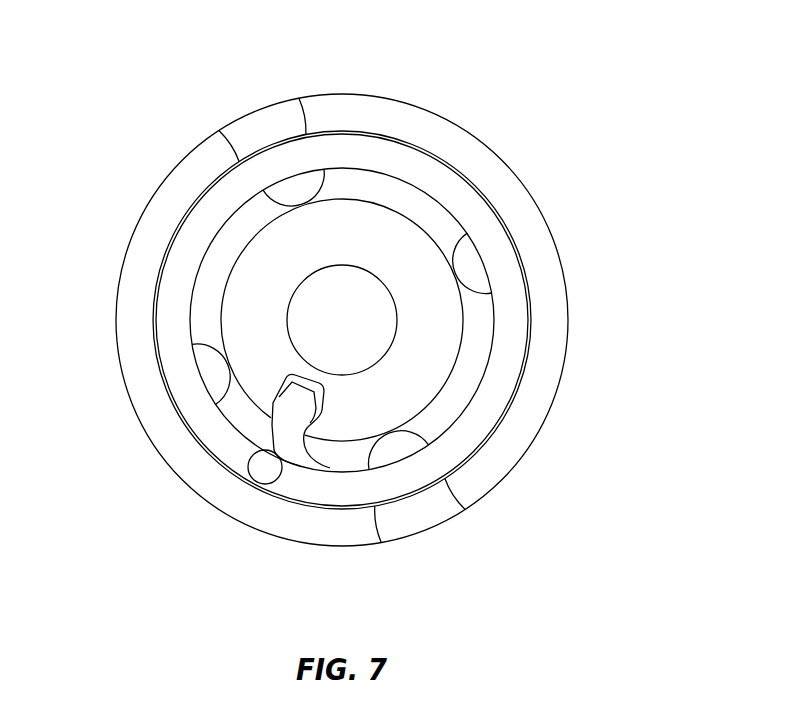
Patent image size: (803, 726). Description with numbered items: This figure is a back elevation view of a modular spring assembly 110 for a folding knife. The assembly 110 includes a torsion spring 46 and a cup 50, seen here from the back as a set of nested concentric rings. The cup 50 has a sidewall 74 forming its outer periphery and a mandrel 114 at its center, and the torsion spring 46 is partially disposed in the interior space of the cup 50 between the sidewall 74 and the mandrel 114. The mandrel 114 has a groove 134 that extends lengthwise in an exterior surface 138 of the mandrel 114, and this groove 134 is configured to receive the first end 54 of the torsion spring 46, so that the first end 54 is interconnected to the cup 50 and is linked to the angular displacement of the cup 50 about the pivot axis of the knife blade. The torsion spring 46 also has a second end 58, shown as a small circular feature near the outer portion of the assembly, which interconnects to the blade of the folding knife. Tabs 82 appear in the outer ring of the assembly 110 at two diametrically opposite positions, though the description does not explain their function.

The modular spring assembly 110 is at (627, 47).
The sidewall 74 is at (120, 277).
The cup 50 is at (518, 172).
The torsion spring 46 is at (533, 264).
The tabs 82 is at (250, 127).
The exterior surface 138 is at (455, 362).
The mandrel 114 is at (463, 327).
The first end 54 is at (297, 405).
The groove 134 is at (275, 395).
The second end 58 is at (277, 478).